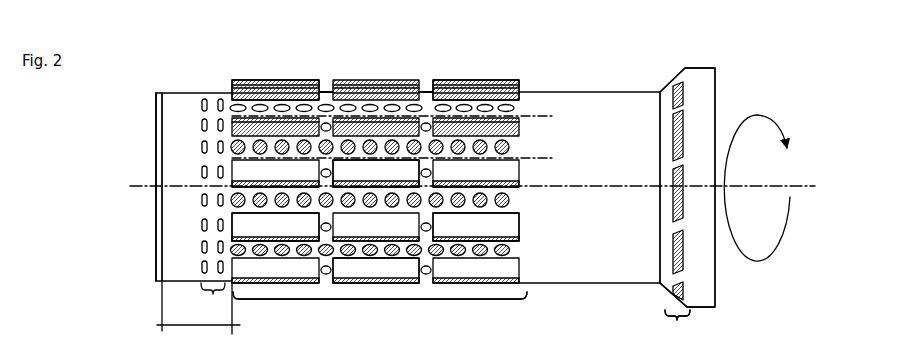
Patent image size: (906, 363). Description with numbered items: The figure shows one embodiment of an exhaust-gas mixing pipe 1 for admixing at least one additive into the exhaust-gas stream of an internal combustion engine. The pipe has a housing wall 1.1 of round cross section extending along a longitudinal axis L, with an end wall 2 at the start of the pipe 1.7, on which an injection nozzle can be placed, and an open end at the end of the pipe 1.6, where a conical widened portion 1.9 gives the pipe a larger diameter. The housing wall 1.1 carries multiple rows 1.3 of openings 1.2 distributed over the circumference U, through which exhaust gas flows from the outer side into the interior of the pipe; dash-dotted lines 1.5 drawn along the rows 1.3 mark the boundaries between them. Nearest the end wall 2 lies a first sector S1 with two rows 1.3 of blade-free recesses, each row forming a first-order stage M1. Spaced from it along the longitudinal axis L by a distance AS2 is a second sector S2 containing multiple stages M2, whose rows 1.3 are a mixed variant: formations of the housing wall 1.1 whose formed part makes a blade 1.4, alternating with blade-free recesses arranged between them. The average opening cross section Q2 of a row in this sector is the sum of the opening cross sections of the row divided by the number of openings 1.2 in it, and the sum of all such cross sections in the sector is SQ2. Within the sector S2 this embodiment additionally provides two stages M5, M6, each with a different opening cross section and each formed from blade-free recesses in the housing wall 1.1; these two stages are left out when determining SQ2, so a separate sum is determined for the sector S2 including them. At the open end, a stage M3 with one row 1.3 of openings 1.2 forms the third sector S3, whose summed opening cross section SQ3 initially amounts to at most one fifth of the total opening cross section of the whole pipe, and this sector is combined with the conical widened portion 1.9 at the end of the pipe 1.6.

The exhaust-gas mixing pipe 1 is at (384, 42).
The housing wall 1.1 is at (617, 92).
The openings 1.2 is at (471, 96).
The rows 1.3 is at (676, 67).
The blade 1.4 is at (358, 180).
The parting line 1.5 is at (527, 115).
The end of the pipe 1.6 is at (721, 262).
The start of the pipe 1.7 is at (156, 250).
The conical widened portion 1.9 is at (661, 296).
The end wall 2 is at (160, 142).
The first-order stage M1 is at (212, 186).
The second-order stage M2 is at (447, 162).
The third stage M3 is at (715, 187).
The average opening cross section of sector S2 Q2 is at (375, 90).
The stage M5 is at (327, 90).
The stage M6 is at (427, 90).
The longitudinal axis L is at (580, 178).
The circumference U is at (743, 128).
The first sector S1 is at (213, 294).
The second sector S2 is at (352, 300).
The sum of opening cross sections of sector S2 SQ2 is at (380, 295).
The third sector S3 is at (677, 320).
The sum of opening cross sections of sector S3 SQ3 is at (677, 315).
The distance between sectors AS2 is at (172, 330).